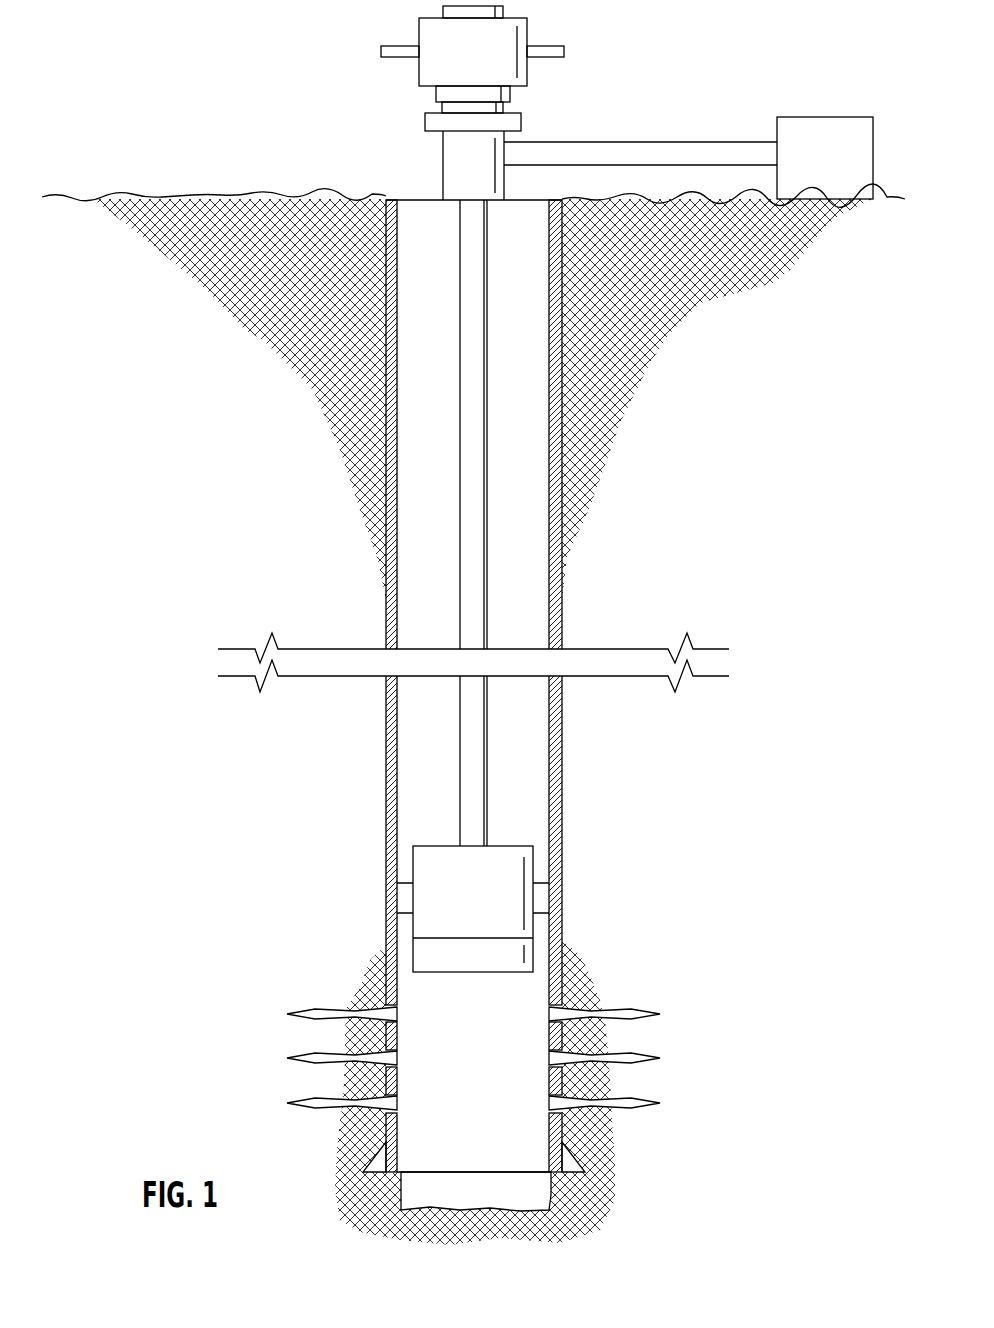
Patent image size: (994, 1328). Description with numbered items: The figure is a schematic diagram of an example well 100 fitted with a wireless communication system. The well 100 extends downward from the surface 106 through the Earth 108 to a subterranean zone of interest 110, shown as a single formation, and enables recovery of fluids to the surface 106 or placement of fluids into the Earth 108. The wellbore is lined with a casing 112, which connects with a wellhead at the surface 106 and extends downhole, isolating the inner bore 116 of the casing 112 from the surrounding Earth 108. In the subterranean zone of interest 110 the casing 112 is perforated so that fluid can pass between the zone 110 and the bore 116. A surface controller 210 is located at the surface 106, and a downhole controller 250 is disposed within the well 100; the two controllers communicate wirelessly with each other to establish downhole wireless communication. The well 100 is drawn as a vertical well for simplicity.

The well 100 is at (271, 98).
The surface 106 is at (75, 197).
The Earth 108 is at (254, 413).
The subterranean zone of interest 110 is at (730, 990).
The casing 112 is at (386, 614).
The inner bore 116 is at (528, 615).
The surface controller 210 is at (842, 171).
The downhole controller 250 is at (488, 918).